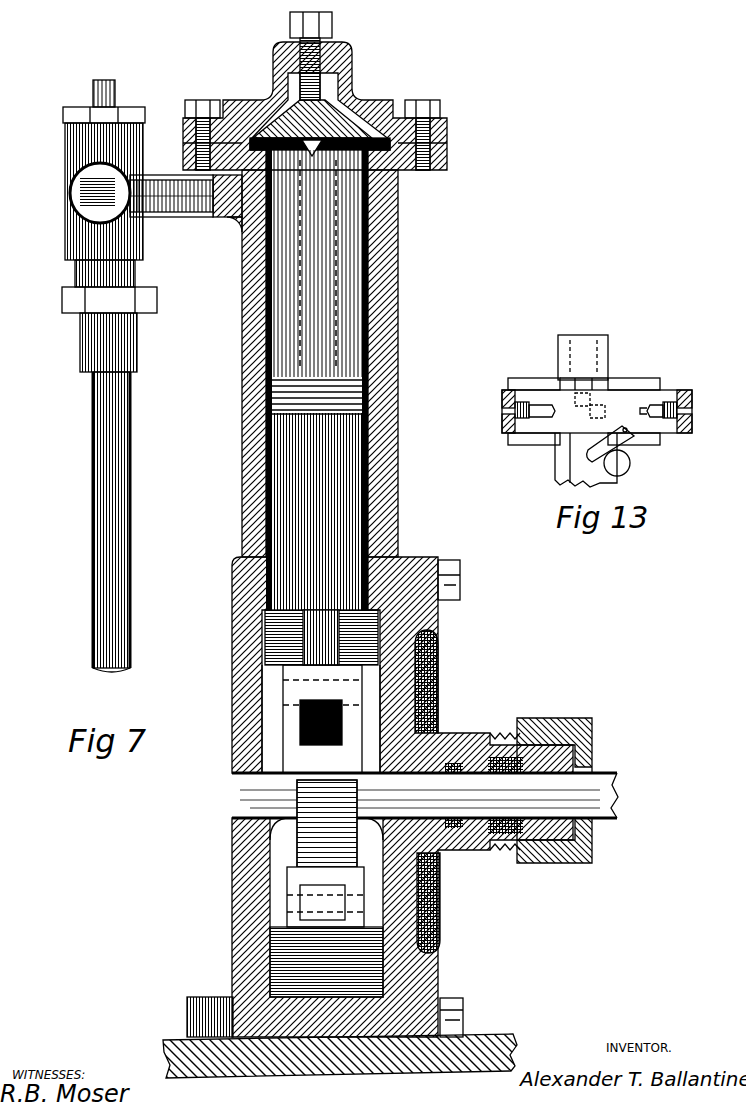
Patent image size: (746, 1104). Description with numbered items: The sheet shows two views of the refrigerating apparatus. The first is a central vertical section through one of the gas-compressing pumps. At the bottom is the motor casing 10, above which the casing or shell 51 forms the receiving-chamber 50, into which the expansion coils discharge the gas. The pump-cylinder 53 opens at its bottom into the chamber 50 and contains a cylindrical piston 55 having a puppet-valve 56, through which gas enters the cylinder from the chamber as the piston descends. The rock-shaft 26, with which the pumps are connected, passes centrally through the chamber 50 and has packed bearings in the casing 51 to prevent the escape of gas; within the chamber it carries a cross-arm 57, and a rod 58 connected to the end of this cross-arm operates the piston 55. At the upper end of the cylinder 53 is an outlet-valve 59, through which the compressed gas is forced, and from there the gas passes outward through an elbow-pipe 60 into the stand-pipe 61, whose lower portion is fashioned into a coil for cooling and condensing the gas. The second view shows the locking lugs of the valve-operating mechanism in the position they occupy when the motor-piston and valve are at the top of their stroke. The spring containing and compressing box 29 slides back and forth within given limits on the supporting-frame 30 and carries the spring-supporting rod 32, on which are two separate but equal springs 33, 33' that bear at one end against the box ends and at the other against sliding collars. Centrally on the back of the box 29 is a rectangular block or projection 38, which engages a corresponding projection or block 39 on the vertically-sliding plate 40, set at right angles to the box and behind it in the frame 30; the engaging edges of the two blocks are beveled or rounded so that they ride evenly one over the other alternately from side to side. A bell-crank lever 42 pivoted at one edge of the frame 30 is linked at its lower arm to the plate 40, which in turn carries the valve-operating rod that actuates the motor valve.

In FIG. 7, the casing 10 is at (490, 1039).
In FIG. 7, the rock-shaft 26 is at (600, 774).
In FIG. 7, the receiving-chamber 50 is at (268, 673).
In FIG. 7, the casing or shell 51 is at (232, 637).
In FIG. 7, the pump-cylinder 53 is at (395, 310).
In FIG. 7, the piston 55 is at (370, 272).
In FIG. 7, the puppet-valve 56 is at (321, 637).
In FIG. 7, the cross-arm 57 is at (326, 823).
In FIG. 7, the rod 58 is at (327, 920).
In FIG. 7, the outlet-valve 59 is at (365, 178).
In FIG. 7, the elbow-pipe 60 is at (170, 222).
In FIG. 7, the stand-pipe 61 is at (130, 403).
In FIG. 13, the spring containing and compressing box 29 is at (693, 398).
In FIG. 13, the supporting-frame 30 is at (560, 455).
In FIG. 13, the spring-supporting rod 32 is at (650, 412).
In FIG. 13, the spring 33 is at (533, 391).
In FIG. 13, the spring 33' is at (669, 395).
In FIG. 13, the rectangular block or projection 38 is at (607, 408).
In FIG. 13, the projection or block 39 is at (578, 406).
In FIG. 13, the vertically-sliding plate 40 is at (583, 458).
In FIG. 13, the bell-crank lever 42 is at (631, 440).